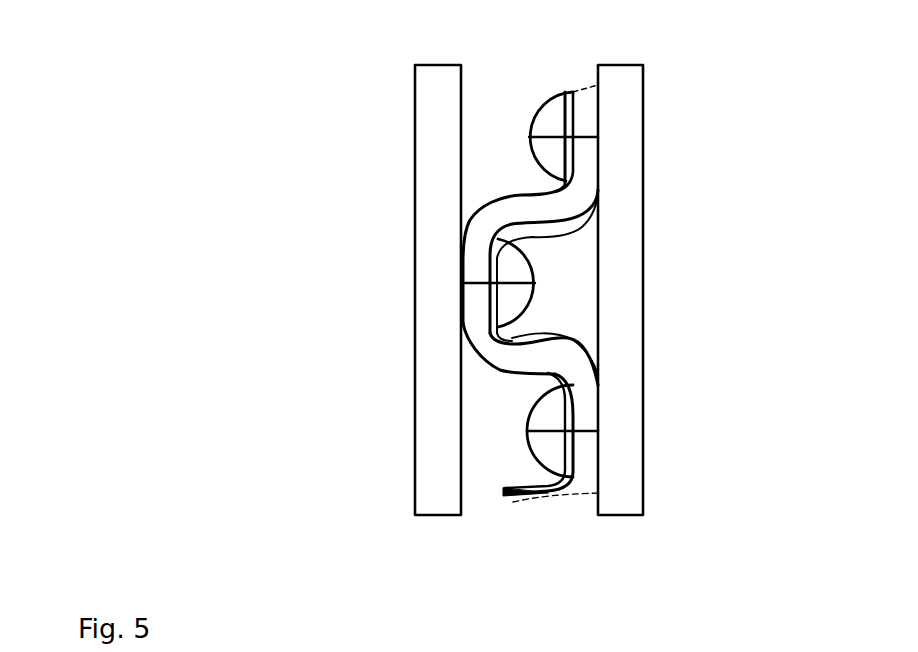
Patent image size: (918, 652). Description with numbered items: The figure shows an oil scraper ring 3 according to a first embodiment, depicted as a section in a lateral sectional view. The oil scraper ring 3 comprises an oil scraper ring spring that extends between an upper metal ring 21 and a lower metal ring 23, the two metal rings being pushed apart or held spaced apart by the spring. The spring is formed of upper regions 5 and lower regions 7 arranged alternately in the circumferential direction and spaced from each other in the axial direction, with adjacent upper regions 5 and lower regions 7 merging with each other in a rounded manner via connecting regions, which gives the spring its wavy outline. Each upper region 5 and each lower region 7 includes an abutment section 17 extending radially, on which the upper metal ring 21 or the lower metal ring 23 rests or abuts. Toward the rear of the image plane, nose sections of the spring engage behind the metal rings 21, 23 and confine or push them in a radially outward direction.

The oil scraper ring 3 is at (282, 163).
The upper region 5 is at (478, 300).
The lower region 7 is at (585, 148).
The abutment section 17 is at (600, 430).
The upper metal ring 21 is at (447, 493).
The lower metal ring 23 is at (628, 490).